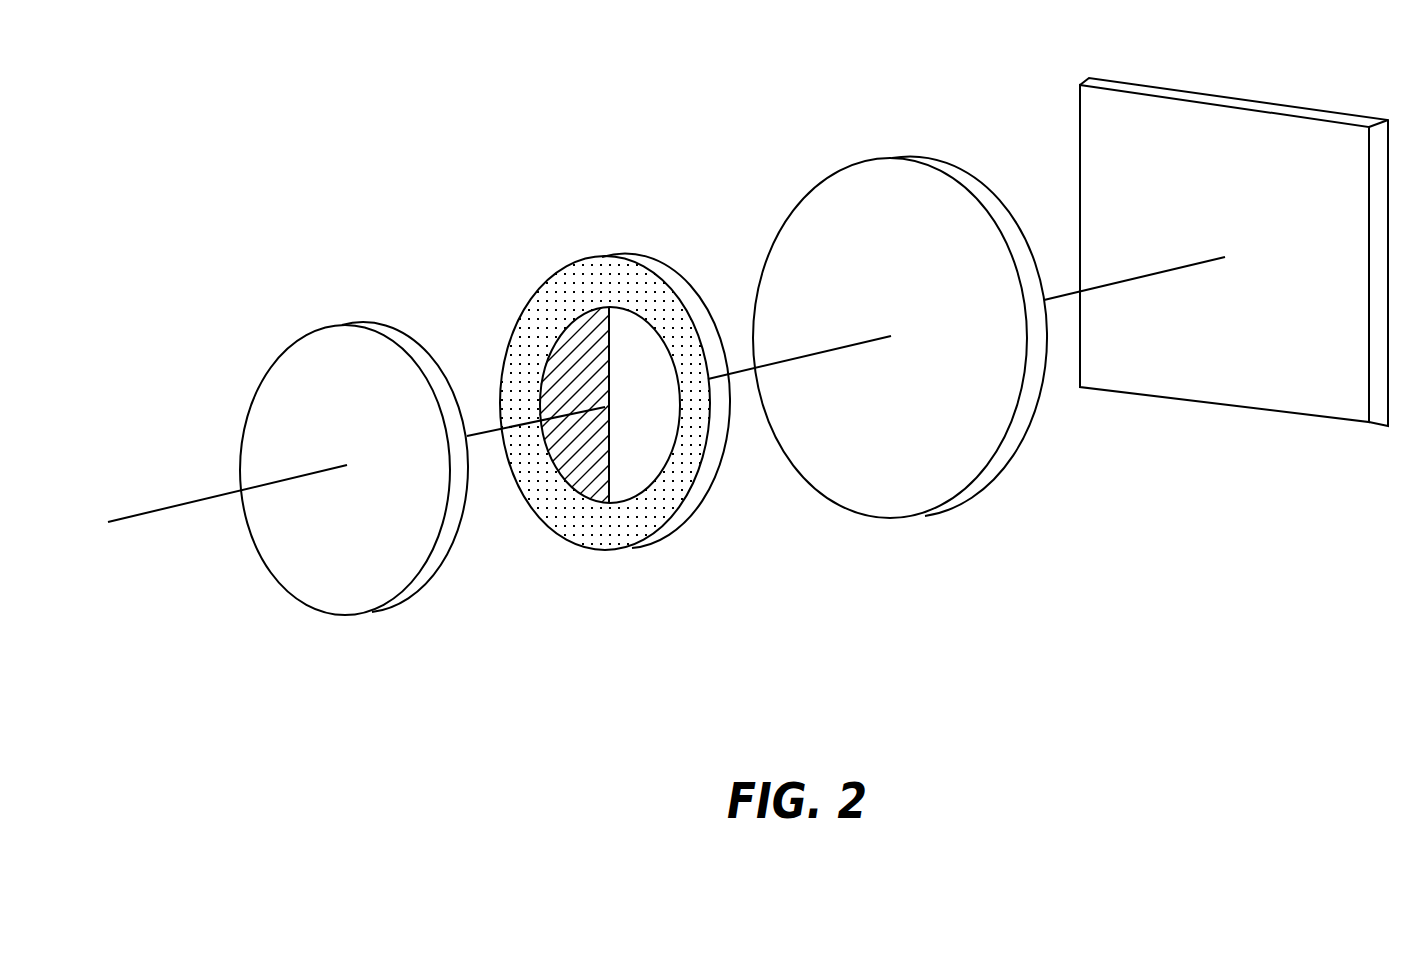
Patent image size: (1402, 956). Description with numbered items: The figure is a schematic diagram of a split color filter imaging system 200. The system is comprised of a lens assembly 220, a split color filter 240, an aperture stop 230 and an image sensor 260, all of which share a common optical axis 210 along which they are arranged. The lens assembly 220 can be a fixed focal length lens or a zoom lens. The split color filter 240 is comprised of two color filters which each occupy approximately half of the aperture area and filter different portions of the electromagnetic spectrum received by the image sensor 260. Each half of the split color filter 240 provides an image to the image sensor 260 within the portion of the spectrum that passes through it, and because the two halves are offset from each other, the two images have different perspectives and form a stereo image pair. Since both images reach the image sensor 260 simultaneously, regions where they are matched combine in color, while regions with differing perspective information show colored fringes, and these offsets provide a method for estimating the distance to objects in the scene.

The split color filter imaging system 200 is at (548, 64).
The optical axis 210 is at (185, 502).
The lens assembly 220 is at (342, 618).
The aperture stop 230 is at (583, 550).
The split color filter 240 is at (580, 342).
The image sensor 260 is at (1240, 415).